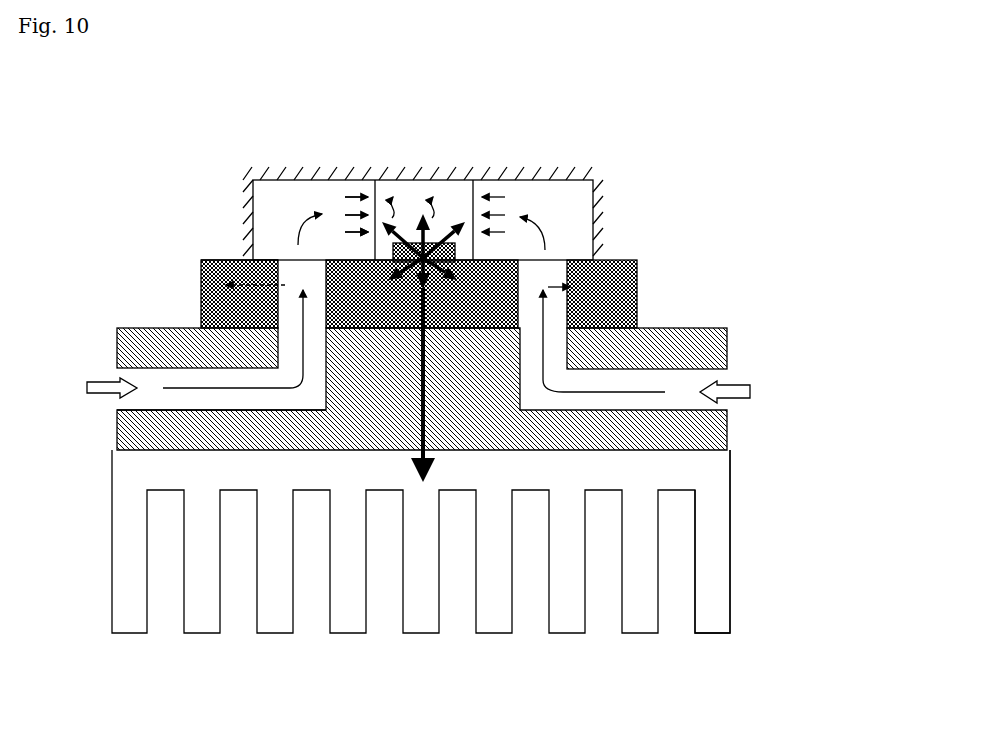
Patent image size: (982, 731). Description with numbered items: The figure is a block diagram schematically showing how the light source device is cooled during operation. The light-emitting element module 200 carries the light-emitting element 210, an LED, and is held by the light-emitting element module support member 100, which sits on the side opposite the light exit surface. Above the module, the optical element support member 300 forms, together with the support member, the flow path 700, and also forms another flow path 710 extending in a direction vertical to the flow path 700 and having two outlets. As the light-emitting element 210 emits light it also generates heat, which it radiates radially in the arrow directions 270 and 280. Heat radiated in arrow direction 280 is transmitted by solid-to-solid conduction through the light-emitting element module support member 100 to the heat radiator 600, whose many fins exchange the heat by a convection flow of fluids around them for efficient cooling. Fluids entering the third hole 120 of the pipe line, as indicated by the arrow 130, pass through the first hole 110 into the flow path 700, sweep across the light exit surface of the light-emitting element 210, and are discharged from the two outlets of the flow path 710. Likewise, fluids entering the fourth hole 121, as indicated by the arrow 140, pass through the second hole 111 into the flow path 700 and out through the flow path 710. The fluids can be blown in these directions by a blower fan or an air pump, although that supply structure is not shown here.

The light-emitting element module support member 100 is at (165, 447).
The first hole 110 is at (638, 298).
The second hole 111 is at (227, 258).
The third hole 120 is at (710, 330).
The fourth hole 121 is at (150, 405).
The arrow 130 is at (742, 392).
The arrow 140 is at (107, 378).
The light-emitting element module 200 is at (200, 307).
The light-emitting element 210 is at (388, 250).
The arrow direction 270 is at (392, 220).
The arrow direction 280 is at (507, 260).
The optical element support member 300 is at (543, 178).
The heat radiator 600 is at (715, 545).
The flow path 700 is at (268, 190).
The flow path 710 is at (392, 187).